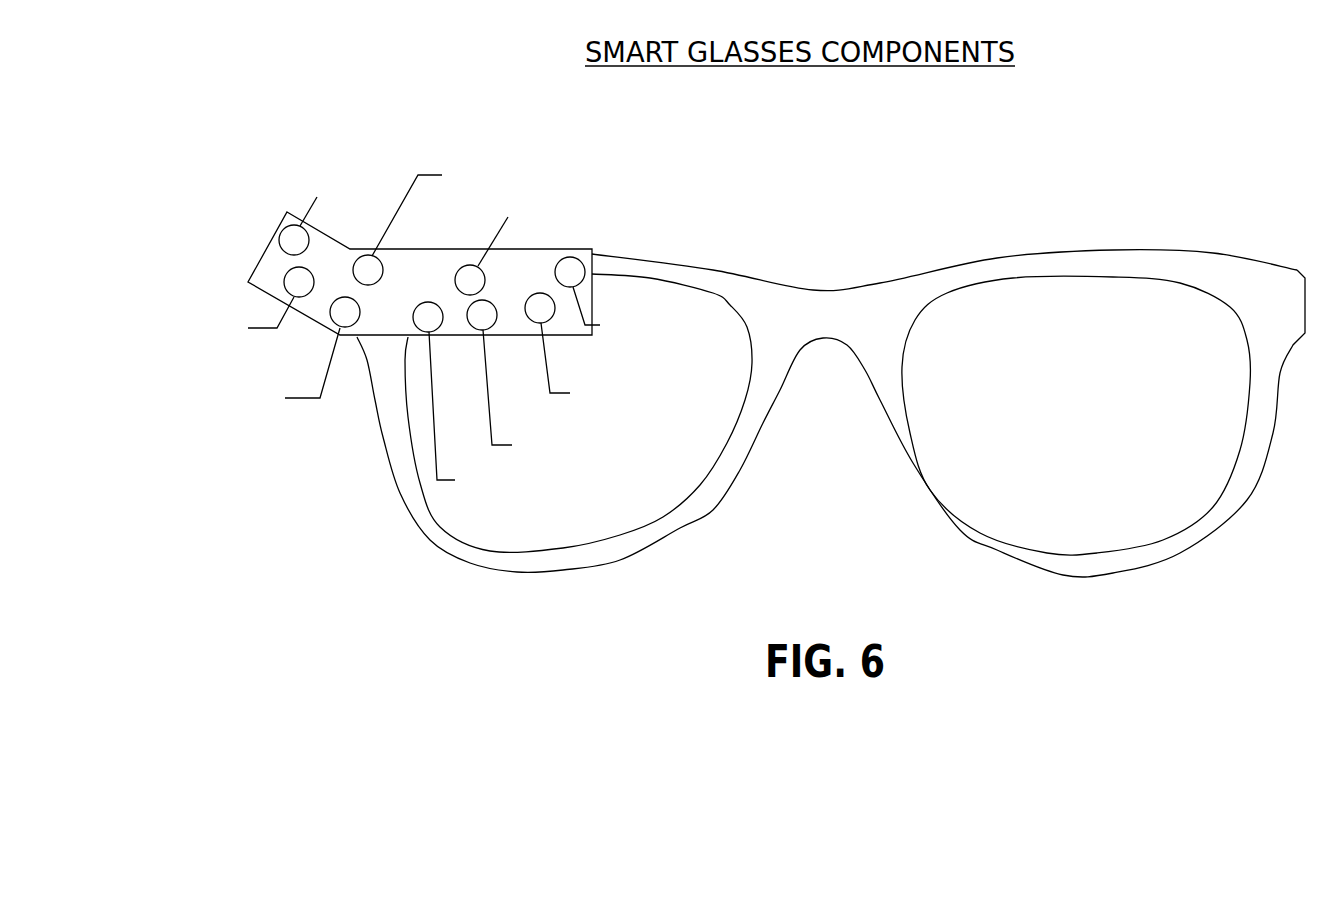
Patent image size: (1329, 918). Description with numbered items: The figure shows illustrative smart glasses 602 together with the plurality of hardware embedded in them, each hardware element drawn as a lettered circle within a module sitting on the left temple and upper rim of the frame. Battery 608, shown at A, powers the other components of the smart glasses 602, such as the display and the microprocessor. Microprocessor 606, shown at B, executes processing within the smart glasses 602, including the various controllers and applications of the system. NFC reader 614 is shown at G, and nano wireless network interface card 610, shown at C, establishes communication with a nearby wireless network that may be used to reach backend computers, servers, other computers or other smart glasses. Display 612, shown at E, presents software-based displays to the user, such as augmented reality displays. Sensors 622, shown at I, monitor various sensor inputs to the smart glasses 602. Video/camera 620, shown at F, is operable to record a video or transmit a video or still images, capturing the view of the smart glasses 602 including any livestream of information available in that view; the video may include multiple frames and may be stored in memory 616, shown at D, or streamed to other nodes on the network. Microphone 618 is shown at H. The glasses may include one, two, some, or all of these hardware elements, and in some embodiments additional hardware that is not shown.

The smart glasses 602 is at (1098, 250).
The microprocessor 606 is at (150, 313).
The battery 608 is at (280, 183).
The nano wireless network interface card 610 is at (892, 178).
The display 612 is at (610, 218).
The NFC reader 614 is at (212, 415).
The memory 616 is at (510, 497).
The microphone 618 is at (620, 462).
The video/camera 620 is at (655, 393).
The sensors 622 is at (708, 328).